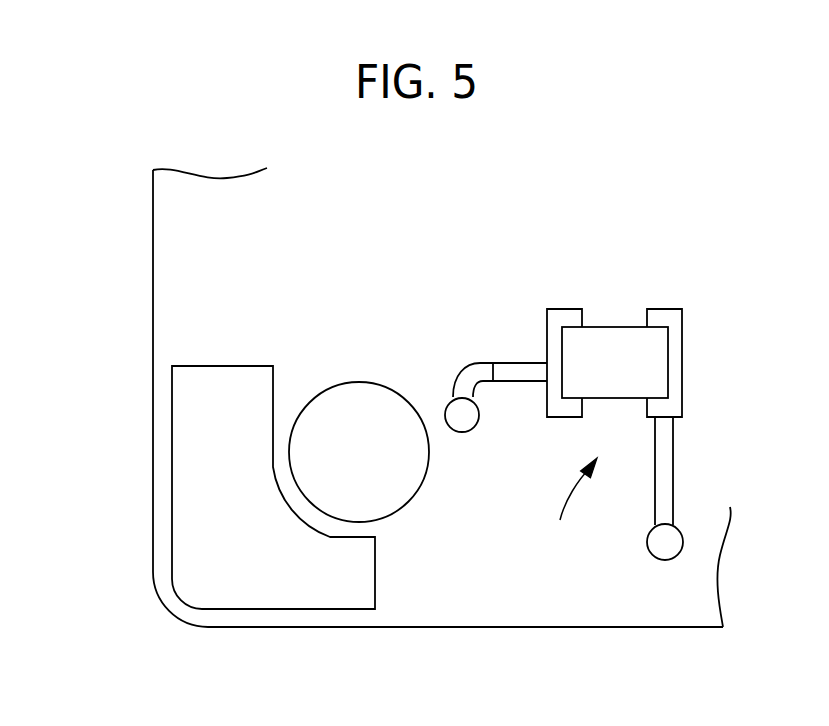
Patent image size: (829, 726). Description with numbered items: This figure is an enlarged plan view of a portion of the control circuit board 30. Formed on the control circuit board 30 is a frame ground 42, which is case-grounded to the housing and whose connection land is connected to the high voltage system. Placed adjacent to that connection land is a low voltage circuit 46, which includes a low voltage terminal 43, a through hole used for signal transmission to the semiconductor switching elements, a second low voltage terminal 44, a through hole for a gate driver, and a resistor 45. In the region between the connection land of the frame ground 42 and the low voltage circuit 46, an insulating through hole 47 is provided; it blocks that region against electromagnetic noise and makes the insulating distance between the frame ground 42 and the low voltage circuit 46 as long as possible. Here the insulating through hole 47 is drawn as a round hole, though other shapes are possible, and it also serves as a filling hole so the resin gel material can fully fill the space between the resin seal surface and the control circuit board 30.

The control circuit board 30 is at (153, 288).
The frame ground 42 is at (302, 610).
The low voltage terminal (through hole) for signal transmission 43 is at (660, 560).
The low voltage terminal (through hole) for gate driver 44 is at (450, 402).
The resistor 45 is at (615, 345).
The low voltage circuit 46 is at (570, 507).
The insulating through hole 47 is at (358, 382).